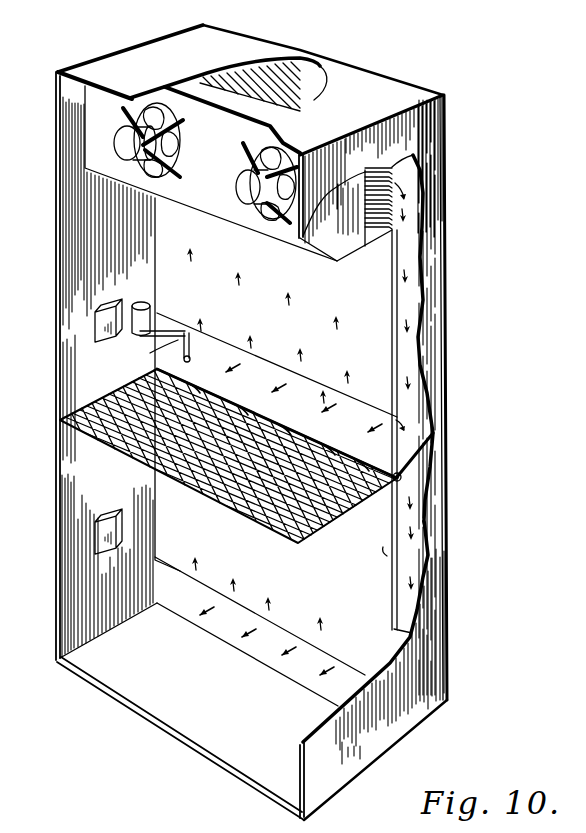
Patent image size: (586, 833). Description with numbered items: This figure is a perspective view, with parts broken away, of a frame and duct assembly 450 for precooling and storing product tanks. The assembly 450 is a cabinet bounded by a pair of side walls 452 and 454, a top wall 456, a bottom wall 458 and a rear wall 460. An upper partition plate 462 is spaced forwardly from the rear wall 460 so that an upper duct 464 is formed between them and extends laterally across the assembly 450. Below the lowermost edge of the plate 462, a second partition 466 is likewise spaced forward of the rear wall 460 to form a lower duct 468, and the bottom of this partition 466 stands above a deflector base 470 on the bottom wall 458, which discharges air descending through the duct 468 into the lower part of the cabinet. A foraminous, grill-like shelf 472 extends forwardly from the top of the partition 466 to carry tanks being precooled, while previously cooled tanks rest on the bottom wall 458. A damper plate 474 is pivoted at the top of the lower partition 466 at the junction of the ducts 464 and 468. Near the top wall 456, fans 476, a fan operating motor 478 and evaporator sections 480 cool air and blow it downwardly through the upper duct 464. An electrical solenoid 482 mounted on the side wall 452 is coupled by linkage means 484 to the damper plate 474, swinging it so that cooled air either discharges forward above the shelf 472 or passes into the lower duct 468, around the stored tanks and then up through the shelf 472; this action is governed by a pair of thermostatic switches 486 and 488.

The frame and duct assembly 450 is at (446, 189).
The side wall 452 is at (63, 276).
The side wall 454 is at (430, 326).
The top wall 456 is at (377, 81).
The bottom wall 458 is at (221, 750).
The rear wall 460 is at (420, 498).
The upper partition plate 462 is at (391, 265).
The upper duct 464 is at (313, 73).
The second partition 466 is at (383, 547).
The lower duct 468 is at (423, 525).
The deflector base 470 is at (327, 697).
The foraminous grill-like shelf 472 is at (60, 420).
The damper plate 474 is at (420, 434).
The fan 476 is at (170, 142).
The fan operating motor 478 is at (127, 158).
The evaporator section 480 is at (237, 75).
The electrical solenoid 482 is at (150, 322).
The linkage means 484 is at (167, 350).
The thermostatic switch 486 is at (110, 312).
The thermostatic switch 488 is at (112, 527).